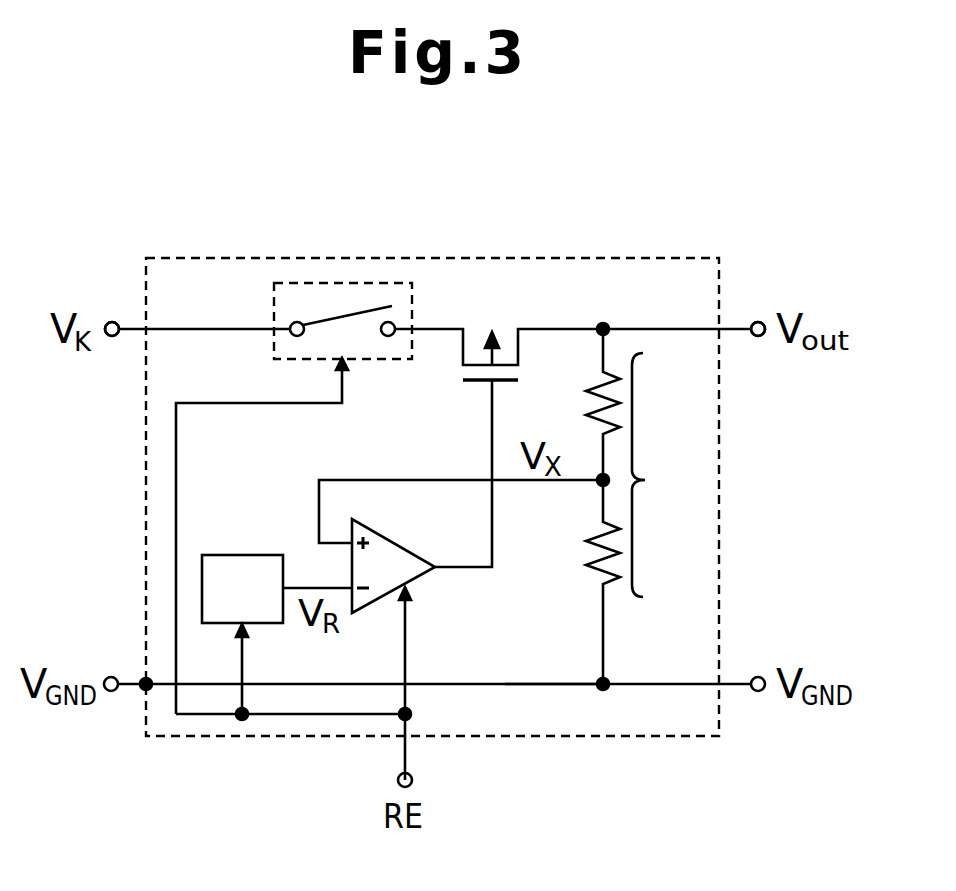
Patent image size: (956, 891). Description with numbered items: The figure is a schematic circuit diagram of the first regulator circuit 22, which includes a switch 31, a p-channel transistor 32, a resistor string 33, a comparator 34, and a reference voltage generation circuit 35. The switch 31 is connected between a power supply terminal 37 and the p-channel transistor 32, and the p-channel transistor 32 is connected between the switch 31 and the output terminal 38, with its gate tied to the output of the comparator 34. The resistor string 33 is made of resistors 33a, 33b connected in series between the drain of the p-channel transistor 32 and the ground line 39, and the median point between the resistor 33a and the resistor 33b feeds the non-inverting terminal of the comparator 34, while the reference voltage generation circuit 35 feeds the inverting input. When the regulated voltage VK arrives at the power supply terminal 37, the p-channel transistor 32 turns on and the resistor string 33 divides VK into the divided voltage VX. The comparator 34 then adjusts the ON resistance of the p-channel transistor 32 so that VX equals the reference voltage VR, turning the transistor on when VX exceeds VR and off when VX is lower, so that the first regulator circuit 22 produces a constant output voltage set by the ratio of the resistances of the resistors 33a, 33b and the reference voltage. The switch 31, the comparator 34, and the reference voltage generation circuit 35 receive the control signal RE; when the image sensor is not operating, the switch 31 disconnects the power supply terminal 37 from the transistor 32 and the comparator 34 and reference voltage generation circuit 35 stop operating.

The first regulator circuit 22 is at (560, 258).
The switch 31 is at (345, 283).
The p-channel transistor 32 is at (462, 350).
The resistor string 33 is at (599, 493).
The resistor 33a is at (598, 398).
The resistor 33b is at (598, 564).
The comparator 34 is at (396, 540).
The reference voltage generation circuit 35 is at (243, 555).
The power supply terminal 37 is at (112, 321).
The output terminal 38 is at (760, 321).
The ground terminal 39 is at (522, 688).